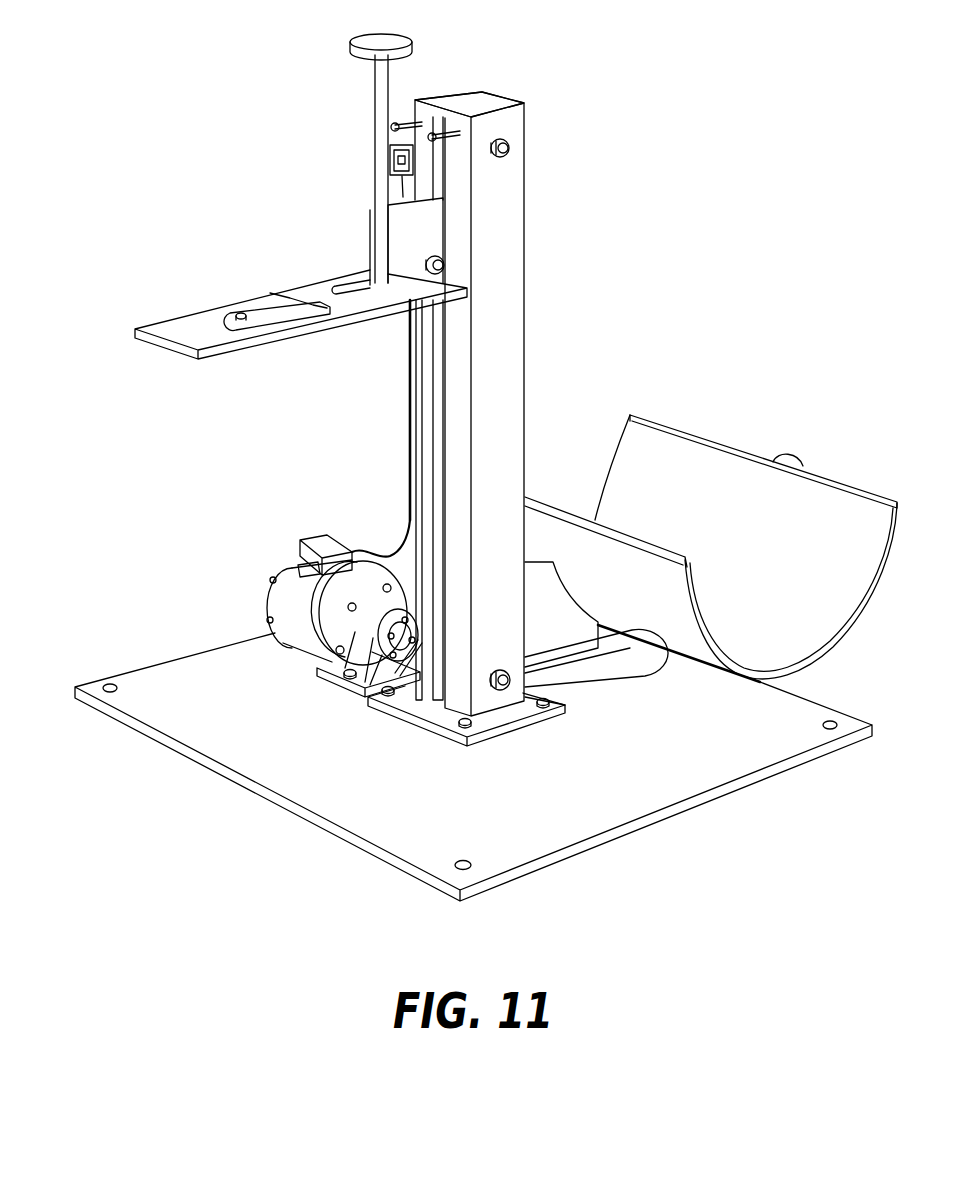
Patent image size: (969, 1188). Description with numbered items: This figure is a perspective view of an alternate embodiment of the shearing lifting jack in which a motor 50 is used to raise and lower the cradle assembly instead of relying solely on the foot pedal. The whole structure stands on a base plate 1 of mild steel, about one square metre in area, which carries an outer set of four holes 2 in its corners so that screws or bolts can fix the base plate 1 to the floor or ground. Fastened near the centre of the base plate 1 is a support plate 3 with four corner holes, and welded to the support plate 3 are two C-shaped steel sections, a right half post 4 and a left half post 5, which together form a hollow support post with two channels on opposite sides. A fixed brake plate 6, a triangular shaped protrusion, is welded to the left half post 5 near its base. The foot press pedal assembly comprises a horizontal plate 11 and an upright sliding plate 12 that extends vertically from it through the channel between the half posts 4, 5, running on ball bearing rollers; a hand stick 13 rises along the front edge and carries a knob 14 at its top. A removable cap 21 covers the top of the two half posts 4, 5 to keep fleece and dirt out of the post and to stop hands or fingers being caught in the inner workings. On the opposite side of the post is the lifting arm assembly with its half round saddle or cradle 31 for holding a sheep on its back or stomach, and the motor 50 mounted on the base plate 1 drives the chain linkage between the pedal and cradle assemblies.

The base plate 1 is at (687, 778).
The holes 2 is at (463, 858).
The support plate 3 is at (490, 722).
The right half post 4 is at (500, 397).
The left half post 5 is at (420, 387).
The fixed brake plate 6 is at (415, 690).
The horizontal plate 11 is at (162, 327).
The upright sliding plate 12 is at (425, 222).
The hand stick 13 is at (375, 80).
The knob 14 is at (368, 37).
The removable cap 21 is at (474, 97).
The half round saddle or cradle 31 is at (708, 477).
The motor 50 is at (288, 608).